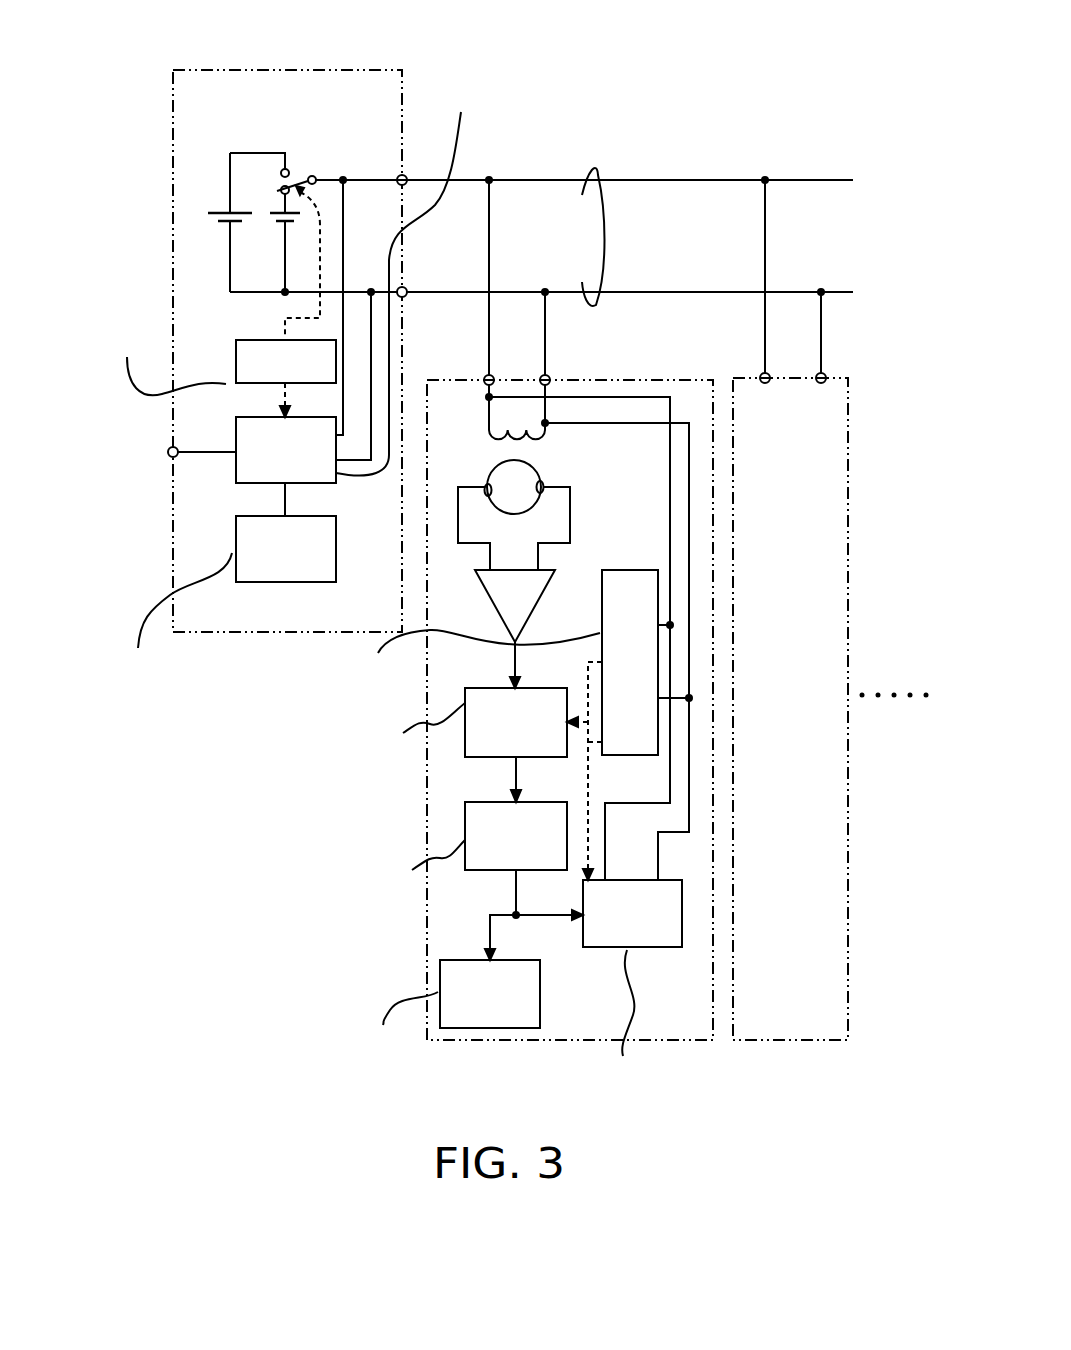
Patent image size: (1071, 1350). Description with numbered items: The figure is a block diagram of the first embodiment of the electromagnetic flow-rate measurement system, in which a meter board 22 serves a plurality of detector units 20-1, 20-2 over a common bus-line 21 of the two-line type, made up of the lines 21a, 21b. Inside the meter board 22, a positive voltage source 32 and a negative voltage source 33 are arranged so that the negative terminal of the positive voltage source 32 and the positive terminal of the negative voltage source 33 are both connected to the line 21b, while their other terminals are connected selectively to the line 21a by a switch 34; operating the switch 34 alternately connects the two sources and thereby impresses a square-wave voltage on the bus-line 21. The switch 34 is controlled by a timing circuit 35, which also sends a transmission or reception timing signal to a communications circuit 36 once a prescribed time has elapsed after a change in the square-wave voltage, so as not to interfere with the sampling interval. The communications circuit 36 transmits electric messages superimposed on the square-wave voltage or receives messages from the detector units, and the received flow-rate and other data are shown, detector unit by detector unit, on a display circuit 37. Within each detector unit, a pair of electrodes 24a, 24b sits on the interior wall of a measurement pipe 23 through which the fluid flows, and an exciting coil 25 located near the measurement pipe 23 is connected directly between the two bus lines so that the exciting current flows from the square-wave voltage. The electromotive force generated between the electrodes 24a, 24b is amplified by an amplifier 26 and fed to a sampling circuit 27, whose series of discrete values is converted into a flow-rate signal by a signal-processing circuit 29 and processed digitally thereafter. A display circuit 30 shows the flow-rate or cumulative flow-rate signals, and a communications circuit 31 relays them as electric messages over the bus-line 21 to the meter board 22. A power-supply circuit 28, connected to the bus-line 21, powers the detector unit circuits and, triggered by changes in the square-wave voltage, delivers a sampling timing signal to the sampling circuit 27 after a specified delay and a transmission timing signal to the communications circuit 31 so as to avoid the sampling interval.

The detector unit 20-1 is at (698, 376).
The detector unit 20-2 is at (839, 376).
The bus-line 21 is at (595, 168).
The line of the bus-line 21a is at (700, 178).
The line of the bus-line 21b is at (700, 290).
The meter board 22 is at (348, 66).
The measurement pipe 23 is at (540, 468).
The electrode 24a is at (546, 482).
The electrode 24b is at (487, 497).
The exciting coil 25 is at (464, 438).
The amplifier 26 is at (545, 597).
The sampling circuit 27 is at (486, 690).
The power-supply circuit 28 is at (640, 757).
The signal-processing circuit 29 is at (486, 807).
The display circuit 30 is at (458, 960).
The communications circuit 31 is at (665, 948).
The positive voltage source 32 is at (222, 230).
The negative voltage source 33 is at (278, 230).
The switch 34 is at (297, 167).
The timing circuit 35 is at (236, 353).
The communications circuit 36 is at (236, 433).
The display circuit 37 is at (336, 528).